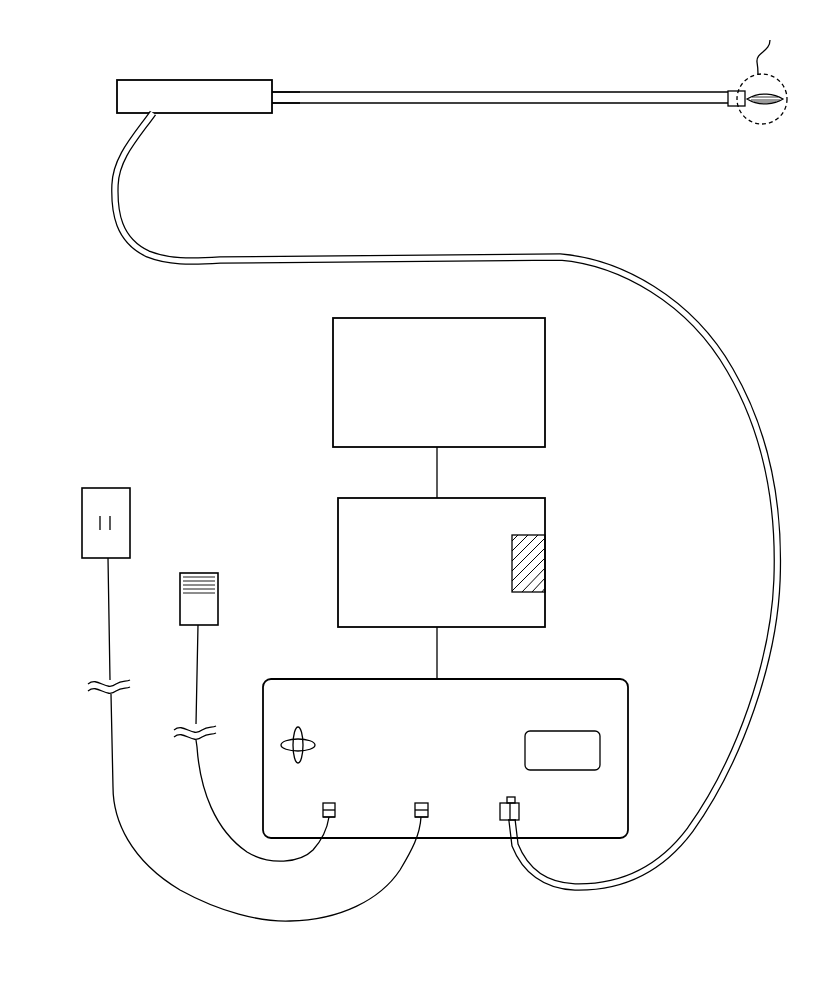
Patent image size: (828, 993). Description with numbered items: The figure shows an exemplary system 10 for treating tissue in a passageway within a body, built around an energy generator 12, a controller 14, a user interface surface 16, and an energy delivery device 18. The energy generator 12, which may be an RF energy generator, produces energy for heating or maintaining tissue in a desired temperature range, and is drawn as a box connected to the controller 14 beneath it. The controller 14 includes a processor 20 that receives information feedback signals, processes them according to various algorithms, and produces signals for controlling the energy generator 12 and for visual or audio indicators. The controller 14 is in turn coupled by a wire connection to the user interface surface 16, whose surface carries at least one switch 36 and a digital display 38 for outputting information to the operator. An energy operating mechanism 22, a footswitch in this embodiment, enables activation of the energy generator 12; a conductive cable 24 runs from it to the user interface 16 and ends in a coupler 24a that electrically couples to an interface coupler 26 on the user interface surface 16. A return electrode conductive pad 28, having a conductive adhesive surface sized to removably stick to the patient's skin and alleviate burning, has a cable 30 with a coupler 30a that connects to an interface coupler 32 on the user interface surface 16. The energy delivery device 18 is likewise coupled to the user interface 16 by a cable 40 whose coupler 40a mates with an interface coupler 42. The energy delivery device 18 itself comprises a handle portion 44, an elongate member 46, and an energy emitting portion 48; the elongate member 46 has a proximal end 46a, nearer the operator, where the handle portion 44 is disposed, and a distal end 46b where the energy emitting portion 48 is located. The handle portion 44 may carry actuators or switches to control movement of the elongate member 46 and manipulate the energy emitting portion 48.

The system 10 is at (82, 144).
The energy generator 12 is at (333, 380).
The controller 14 is at (338, 566).
The user interface surface 16 is at (300, 678).
The energy delivery device 18 is at (333, 108).
The processor 20 is at (546, 574).
The energy operating mechanism 22 is at (110, 486).
The conductive cable 24 is at (108, 612).
The coupler 24a is at (428, 817).
The interface coupler 26 is at (421, 803).
The conductive pad 28 is at (204, 572).
The cable 30 is at (192, 658).
The coupler 30a is at (335, 817).
The interface coupler 32 is at (323, 807).
The switch 36 is at (282, 742).
The digital display 38 is at (600, 750).
The cable 40 is at (658, 288).
The coupler 40a is at (516, 820).
The interface coupler 42 is at (500, 804).
The handle portion 44 is at (192, 78).
The elongate member 46 is at (445, 91).
The proximal end 46a is at (278, 88).
The distal end 46b is at (726, 90).
The energy emitting portion 48 is at (752, 105).